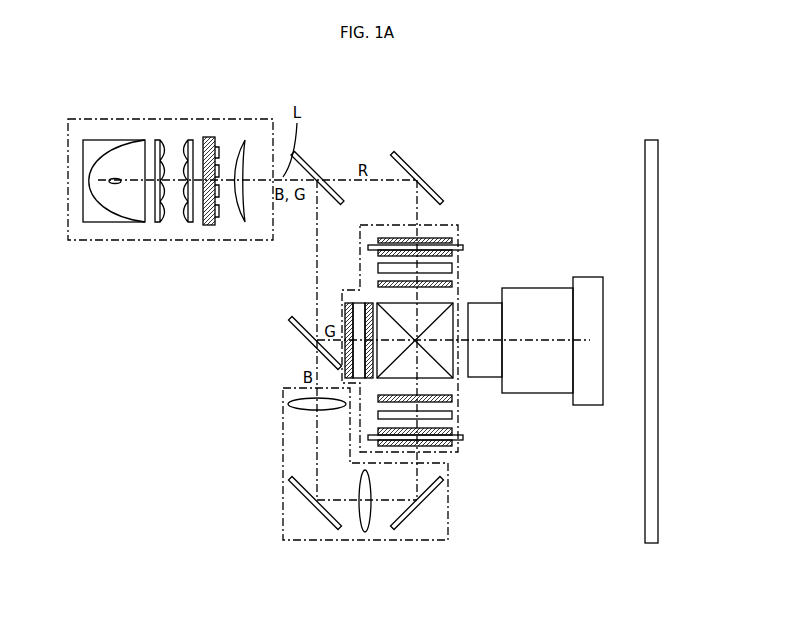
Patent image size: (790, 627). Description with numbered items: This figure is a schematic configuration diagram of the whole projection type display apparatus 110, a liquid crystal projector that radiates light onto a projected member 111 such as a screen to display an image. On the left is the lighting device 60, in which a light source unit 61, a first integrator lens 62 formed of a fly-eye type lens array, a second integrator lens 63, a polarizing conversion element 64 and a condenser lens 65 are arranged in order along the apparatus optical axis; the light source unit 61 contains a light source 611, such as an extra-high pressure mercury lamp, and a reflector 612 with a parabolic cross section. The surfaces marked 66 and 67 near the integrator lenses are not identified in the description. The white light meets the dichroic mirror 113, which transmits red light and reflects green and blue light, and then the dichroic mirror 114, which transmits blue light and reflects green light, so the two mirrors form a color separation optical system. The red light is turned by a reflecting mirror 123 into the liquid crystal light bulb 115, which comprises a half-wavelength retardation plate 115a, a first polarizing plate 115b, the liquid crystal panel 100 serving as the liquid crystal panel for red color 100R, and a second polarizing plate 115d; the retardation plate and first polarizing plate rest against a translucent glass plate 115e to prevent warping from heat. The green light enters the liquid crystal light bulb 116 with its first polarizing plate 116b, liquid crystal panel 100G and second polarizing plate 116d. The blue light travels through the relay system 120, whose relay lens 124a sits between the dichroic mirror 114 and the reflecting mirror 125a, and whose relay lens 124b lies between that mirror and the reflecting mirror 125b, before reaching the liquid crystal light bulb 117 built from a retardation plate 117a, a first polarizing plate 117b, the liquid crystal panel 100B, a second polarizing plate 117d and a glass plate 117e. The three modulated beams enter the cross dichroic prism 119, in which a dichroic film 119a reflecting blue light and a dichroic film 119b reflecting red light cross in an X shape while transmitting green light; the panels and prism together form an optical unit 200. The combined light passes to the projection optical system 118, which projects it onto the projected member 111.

The lighting device 60 is at (104, 242).
The light source unit 61 is at (96, 139).
The light source 611 is at (118, 176).
The reflector 612 is at (105, 158).
The first integrator lens 62 is at (162, 140).
The second integrator lens 63 is at (186, 140).
The polarizing conversion element 64 is at (212, 136).
The condenser lens 65 is at (242, 141).
The lens array surface 66 is at (194, 143).
The lens array surface 67 is at (157, 144).
The projection type display apparatus 110 is at (484, 143).
The projected member 111 is at (651, 139).
The dichroic mirror 113 is at (308, 164).
The dichroic mirror 114 is at (300, 337).
The liquid crystal light bulb 115 is at (487, 235).
The λ/2 retardation plate 115a is at (455, 240).
The first polarizing plate 115b is at (453, 253).
The second polarizing plate 115d is at (453, 284).
The translucent glass plate 115e is at (463, 248).
The liquid crystal panel 100 is at (397, 341).
The liquid crystal panel for red color 100R is at (453, 268).
The liquid crystal panel for green light 100G is at (362, 302).
The liquid crystal panel for blue light 100B is at (453, 415).
The liquid crystal light bulb 116 is at (278, 311).
The first polarizing plate 116b is at (350, 302).
The second polarizing plate 116d is at (372, 302).
The liquid crystal light bulb 117 is at (487, 445).
The λ/2 retardation plate 117a is at (453, 444).
The first polarizing plate 117b is at (453, 431).
The second polarizing plate 117d is at (453, 398).
The glass plate 117e is at (463, 438).
The projection optical system 118 is at (600, 392).
The cross dichroic prism 119 is at (410, 316).
The dichroic film 119a is at (453, 316).
The dichroic film 119b is at (385, 303).
The relay system 120 is at (428, 541).
The reflecting mirror 123 is at (408, 164).
The relay lens 124a is at (291, 407).
The relay lens 124b is at (369, 534).
The reflecting mirror 125a is at (324, 517).
The reflecting mirror 125b is at (425, 495).
The optical unit 200 is at (462, 318).